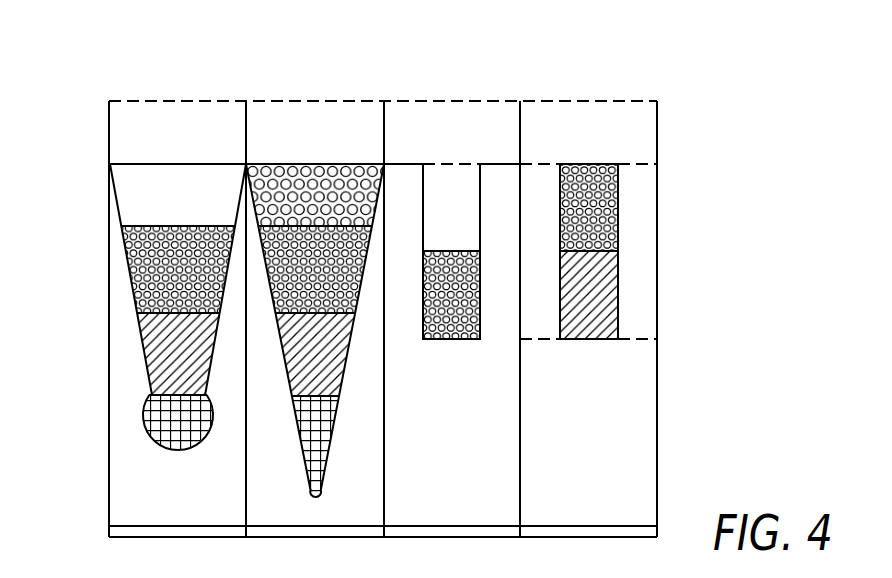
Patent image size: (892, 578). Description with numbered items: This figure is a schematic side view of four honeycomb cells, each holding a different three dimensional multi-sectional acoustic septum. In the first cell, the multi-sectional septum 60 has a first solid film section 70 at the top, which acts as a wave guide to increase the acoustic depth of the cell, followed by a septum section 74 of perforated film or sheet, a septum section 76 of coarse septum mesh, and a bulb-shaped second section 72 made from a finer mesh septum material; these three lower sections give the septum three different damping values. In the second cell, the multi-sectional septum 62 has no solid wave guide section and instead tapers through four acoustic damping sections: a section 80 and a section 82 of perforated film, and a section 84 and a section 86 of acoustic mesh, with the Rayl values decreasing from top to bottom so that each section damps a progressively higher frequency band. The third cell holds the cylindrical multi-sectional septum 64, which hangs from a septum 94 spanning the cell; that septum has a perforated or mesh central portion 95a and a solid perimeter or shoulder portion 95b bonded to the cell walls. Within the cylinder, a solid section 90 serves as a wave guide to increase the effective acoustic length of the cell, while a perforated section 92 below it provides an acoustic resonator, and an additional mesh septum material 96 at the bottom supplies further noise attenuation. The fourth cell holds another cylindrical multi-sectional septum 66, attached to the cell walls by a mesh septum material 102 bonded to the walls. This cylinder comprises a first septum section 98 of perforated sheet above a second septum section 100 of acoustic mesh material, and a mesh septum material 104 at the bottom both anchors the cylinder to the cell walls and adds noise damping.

The multi-sectional septum 60 is at (125, 178).
The first solid film section 70 is at (140, 208).
The septum section 74 is at (137, 280).
The septum section 76 is at (160, 357).
The bulb-shaped second section 72 is at (160, 420).
The acoustic damping section 80 is at (282, 180).
The multi-sectional septum 62 is at (313, 170).
The acoustic damping section 82 is at (285, 292).
The acoustic damping section 84 is at (335, 358).
The acoustic damping section 86 is at (307, 457).
The septum 94 is at (405, 163).
The solid section 90 is at (460, 178).
The central portion 95a is at (433, 163).
The shoulder portion 95b is at (500, 163).
The perforated section 92 is at (435, 312).
The mesh septum material 96 is at (458, 340).
The cylindrical multi-sectional septum 64 is at (480, 193).
The mesh septum material 102 is at (633, 163).
The cylindrical multi-sectional septum 66 is at (618, 207).
The first septum section 98 is at (618, 237).
The second septum section 100 is at (618, 297).
The mesh septum material 104 is at (627, 340).